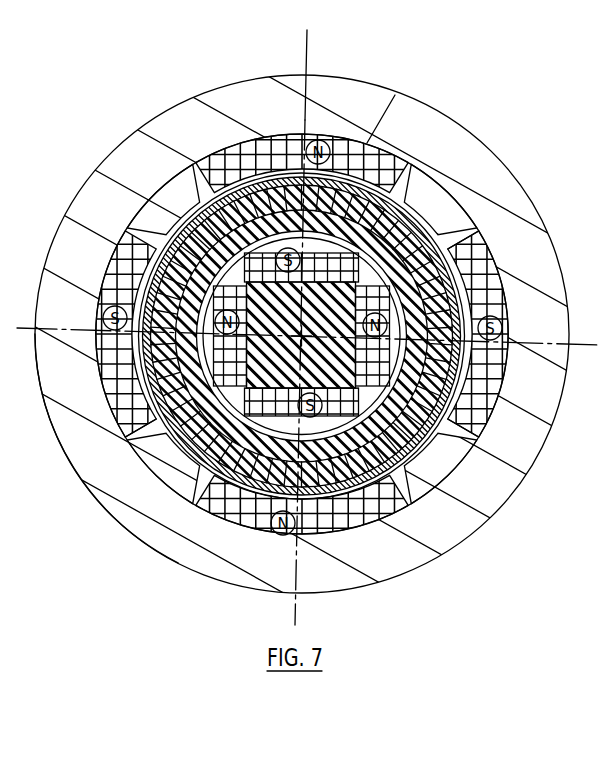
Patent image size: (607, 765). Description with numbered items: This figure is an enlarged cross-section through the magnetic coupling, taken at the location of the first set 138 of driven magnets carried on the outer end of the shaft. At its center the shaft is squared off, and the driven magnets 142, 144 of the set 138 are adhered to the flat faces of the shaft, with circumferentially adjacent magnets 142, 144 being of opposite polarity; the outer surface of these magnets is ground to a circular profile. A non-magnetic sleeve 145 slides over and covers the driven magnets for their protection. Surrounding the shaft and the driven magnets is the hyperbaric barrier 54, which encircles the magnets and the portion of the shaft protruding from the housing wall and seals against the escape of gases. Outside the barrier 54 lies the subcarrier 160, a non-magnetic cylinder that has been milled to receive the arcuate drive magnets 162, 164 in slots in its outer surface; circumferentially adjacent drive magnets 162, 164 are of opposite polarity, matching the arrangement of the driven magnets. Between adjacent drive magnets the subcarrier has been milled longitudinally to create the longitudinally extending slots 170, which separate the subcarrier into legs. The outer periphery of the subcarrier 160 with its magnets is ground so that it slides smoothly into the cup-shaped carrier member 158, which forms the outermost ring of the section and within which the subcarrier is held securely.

The hyperbaric barrier 54 is at (400, 463).
The set of driven magnets 138 is at (274, 440).
The driven magnet 142 is at (145, 202).
The driven magnet 144 is at (457, 227).
The non-magnetic sleeve 145 is at (153, 463).
The carrier member 158 is at (168, 560).
The subcarrier 160 is at (458, 442).
The drive magnet 162 is at (358, 148).
The drive magnet 164 is at (53, 240).
The longitudinally extending slot 170 is at (173, 210).